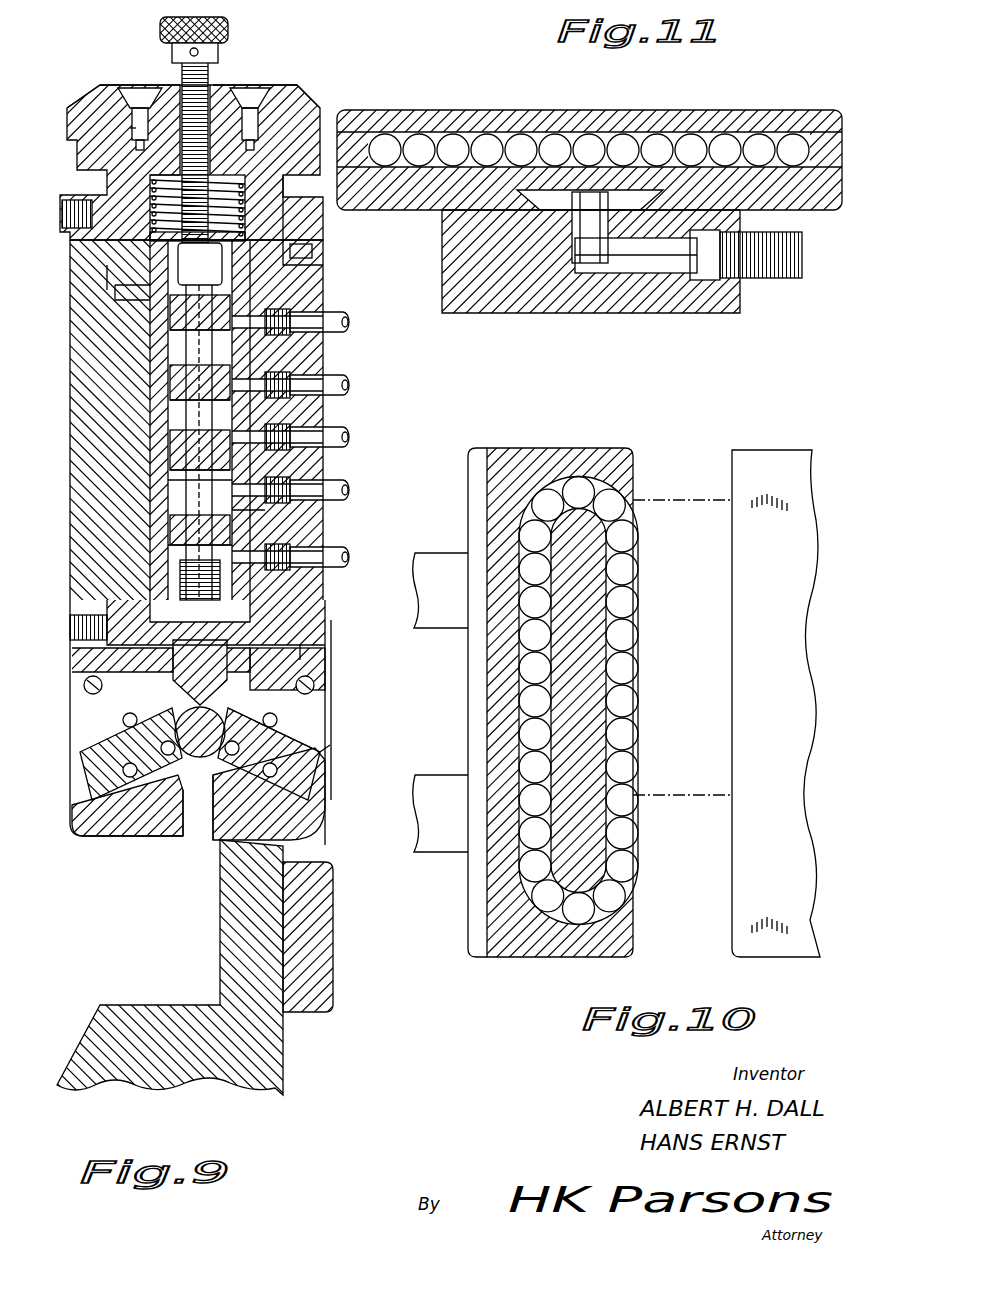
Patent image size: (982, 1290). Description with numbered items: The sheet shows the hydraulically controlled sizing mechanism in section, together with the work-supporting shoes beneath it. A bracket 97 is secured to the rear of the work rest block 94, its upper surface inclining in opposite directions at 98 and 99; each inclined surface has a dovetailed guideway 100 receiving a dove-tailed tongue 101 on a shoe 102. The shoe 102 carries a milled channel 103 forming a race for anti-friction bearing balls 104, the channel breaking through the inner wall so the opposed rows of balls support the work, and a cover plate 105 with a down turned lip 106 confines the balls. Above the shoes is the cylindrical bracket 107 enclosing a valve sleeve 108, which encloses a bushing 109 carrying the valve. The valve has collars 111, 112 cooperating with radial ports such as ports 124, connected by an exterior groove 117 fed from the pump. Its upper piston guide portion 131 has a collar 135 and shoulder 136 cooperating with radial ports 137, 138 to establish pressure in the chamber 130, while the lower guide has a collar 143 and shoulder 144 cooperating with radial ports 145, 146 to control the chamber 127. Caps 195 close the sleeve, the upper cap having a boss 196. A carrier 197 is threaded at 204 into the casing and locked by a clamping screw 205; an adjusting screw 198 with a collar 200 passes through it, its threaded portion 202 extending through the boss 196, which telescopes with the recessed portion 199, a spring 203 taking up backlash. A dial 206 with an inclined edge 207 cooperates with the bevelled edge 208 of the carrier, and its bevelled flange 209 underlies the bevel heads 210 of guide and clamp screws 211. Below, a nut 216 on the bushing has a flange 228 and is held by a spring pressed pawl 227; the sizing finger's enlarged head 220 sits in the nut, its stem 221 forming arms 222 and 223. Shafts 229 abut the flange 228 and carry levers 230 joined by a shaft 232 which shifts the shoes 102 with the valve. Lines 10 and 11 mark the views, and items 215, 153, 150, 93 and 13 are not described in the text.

In FIG. 9, the knurled knob 215 is at (228, 26).
In FIG. 9, the adjusting screw 198 is at (208, 72).
In FIG. 9, the carrier 197 is at (75, 122).
In FIG. 9, the dial 206 is at (120, 87).
In FIG. 9, the inclined edge 207 is at (92, 95).
In FIG. 9, the bevelled edge 208 is at (75, 108).
In FIG. 9, the bevelled flange 209 is at (228, 85).
In FIG. 9, the bevel heads 210 is at (262, 90).
In FIG. 9, the guide and clamp screws 211 is at (290, 95).
In FIG. 9, the collar 200 is at (165, 168).
In FIG. 9, the recessed portion 199 is at (152, 188).
In FIG. 9, the spring 203 is at (283, 185).
In FIG. 9, the clamping screw 205 is at (62, 215).
In FIG. 9, the threads 204 is at (323, 225).
In FIG. 9, the boss 196 is at (300, 250).
In FIG. 9, the threaded portion 202 is at (160, 240).
In FIG. 9, the cylindrical bracket 107 is at (75, 245).
In FIG. 9, the upper piston guide portion 131 is at (208, 290).
In FIG. 9, the radial ports 138 is at (172, 318).
In FIG. 9, the shoulder 136 is at (172, 335).
In FIG. 9, the radial ports 137 is at (172, 350).
In FIG. 9, the collar 135 is at (175, 372).
In FIG. 9, the land edge 153 is at (175, 390).
In FIG. 9, the arm 223 is at (172, 412).
In FIG. 9, the groove 117 is at (172, 434).
In FIG. 9, the radial ports 124 is at (172, 462).
In FIG. 9, the groove 150 is at (172, 500).
In FIG. 9, the radial ports 145 is at (172, 522).
In FIG. 9, the radial ports 146 is at (172, 556).
In FIG. 9, the cap 195 is at (110, 270).
In FIG. 9, the valve sleeve 108 is at (118, 290).
In FIG. 9, the bushing 109 is at (122, 305).
In FIG. 9, the chamber 130 is at (268, 345).
In FIG. 9, the collar 112 is at (262, 398).
In FIG. 9, the collar 111 is at (262, 448).
In FIG. 9, the chamber 127 is at (262, 484).
In FIG. 9, the collar 143 is at (262, 515).
In FIG. 9, the shoulder 144 is at (262, 532).
In FIG. 9, the enlarged head 220 is at (325, 610).
In FIG. 9, the spring pressed pawl 227 is at (75, 628).
In FIG. 9, the stem 221 is at (78, 655).
In FIG. 9, the nut 216 is at (325, 650).
In FIG. 9, the flange 228 is at (300, 665).
In FIG. 9, the arm 222 is at (178, 680).
In FIG. 9, the shafts 229 is at (84, 685).
In FIG. 9, the lever 230 is at (320, 705).
In FIG. 9, the shaft 232 is at (318, 720).
In FIG. 9, the down turned lip 106 is at (185, 715).
In FIG. 9, the shoe 102 is at (90, 770).
In FIG. 11, the shoe 102 is at (520, 197).
In FIG. 10, the shoe 102 is at (742, 458).
In FIG. 9, the anti-friction bearing balls 104 is at (312, 748).
In FIG. 11, the anti-friction bearing balls 104 is at (392, 140).
In FIG. 10, the anti-friction bearing balls 104 is at (628, 490).
In FIG. 9, the inclined surface 98 is at (115, 836).
In FIG. 9, the inclined surface 99 is at (318, 840).
In FIG. 9, the slot 93 is at (200, 757).
In FIG. 9, the work rest block 94 is at (222, 945).
In FIG. 9, the bracket 97 is at (330, 952).
In FIG. 11, the bracket 97 is at (455, 283).
In FIG. 10, the bracket 97 is at (430, 565).
In FIG. 9, the section line 13 is at (35, 565).
In FIG. 9, the section line 11— 11 is at (95, 735).
In FIG. 9, the section line 10— 10 is at (180, 765).
In FIG. 11, the cover plate 105 is at (710, 120).
In FIG. 11, the dove-tailed tongue 101 is at (455, 205).
In FIG. 11, the dovetailed guideway 100 is at (548, 200).
In FIG. 10, the dovetailed guideway 100 is at (466, 640).
In FIG. 10, the milled channel 103 is at (600, 470).